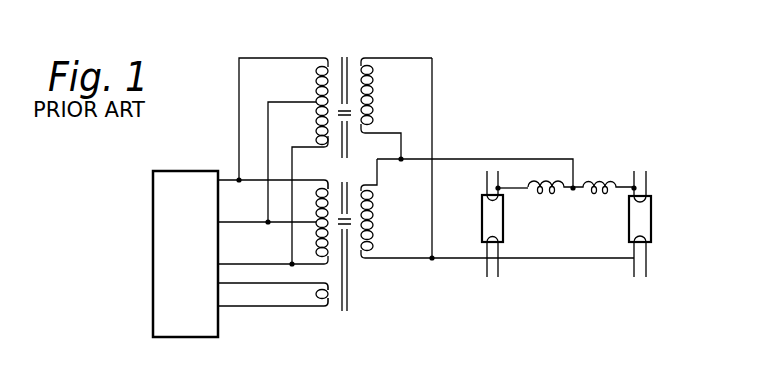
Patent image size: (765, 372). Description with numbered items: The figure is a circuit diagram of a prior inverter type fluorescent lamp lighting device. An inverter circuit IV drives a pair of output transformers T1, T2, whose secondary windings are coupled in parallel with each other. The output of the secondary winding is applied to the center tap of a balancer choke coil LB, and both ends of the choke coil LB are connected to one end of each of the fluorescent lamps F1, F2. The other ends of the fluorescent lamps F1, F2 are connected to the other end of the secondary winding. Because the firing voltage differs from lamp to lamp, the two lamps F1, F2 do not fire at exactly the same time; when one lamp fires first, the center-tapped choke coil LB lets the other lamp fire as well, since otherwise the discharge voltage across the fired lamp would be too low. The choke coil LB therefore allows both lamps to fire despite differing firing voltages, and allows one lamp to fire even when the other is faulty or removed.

The inverter circuit IV is at (185, 171).
The output transformer T1 is at (374, 88).
The output transformer T2 is at (475, 252).
The fluorescent lamp F1 is at (489, 224).
The fluorescent lamp F2 is at (658, 224).
The balancer choke coil LB is at (612, 197).